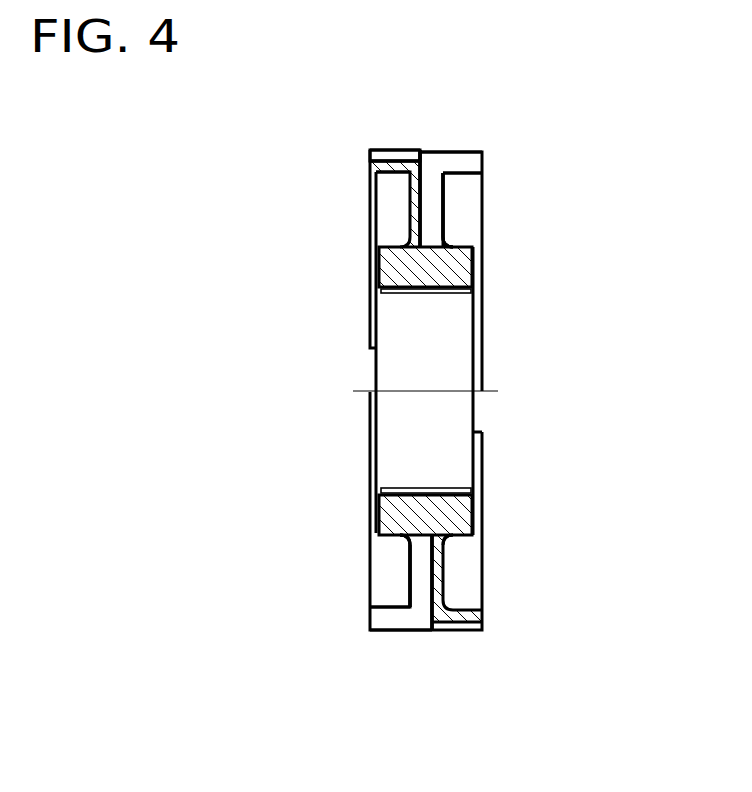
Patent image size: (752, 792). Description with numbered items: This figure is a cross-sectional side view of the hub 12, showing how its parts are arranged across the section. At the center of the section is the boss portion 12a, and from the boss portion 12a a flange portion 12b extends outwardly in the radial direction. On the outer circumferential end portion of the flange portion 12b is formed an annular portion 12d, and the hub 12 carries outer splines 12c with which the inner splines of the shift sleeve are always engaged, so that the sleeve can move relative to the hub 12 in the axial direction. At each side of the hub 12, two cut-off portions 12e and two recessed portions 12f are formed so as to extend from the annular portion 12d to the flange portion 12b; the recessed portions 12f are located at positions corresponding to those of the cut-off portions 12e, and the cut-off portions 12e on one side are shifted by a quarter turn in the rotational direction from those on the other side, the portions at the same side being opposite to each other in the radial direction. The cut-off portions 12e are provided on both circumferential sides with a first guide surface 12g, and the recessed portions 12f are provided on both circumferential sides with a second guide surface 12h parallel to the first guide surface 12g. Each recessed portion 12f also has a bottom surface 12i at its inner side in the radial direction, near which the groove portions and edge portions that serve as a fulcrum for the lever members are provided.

The hub 12 is at (343, 310).
The boss portion 12a is at (460, 512).
The flange portion 12b is at (413, 217).
The outer splines 12c is at (387, 157).
The annular portion 12d is at (383, 168).
The cut-off portion 12e is at (448, 165).
The recessed portion 12f is at (433, 205).
The first guide surface 12g is at (432, 165).
The second guide surface 12h is at (435, 217).
The bottom surface 12i is at (443, 227).